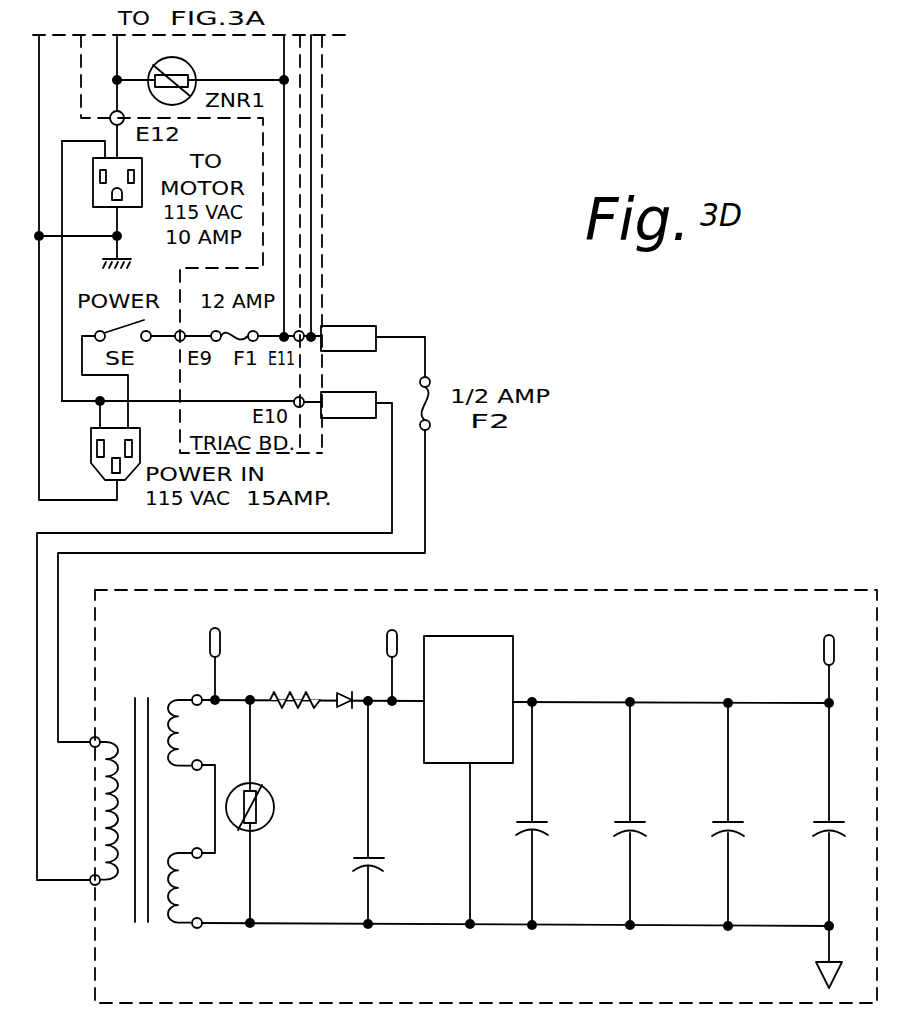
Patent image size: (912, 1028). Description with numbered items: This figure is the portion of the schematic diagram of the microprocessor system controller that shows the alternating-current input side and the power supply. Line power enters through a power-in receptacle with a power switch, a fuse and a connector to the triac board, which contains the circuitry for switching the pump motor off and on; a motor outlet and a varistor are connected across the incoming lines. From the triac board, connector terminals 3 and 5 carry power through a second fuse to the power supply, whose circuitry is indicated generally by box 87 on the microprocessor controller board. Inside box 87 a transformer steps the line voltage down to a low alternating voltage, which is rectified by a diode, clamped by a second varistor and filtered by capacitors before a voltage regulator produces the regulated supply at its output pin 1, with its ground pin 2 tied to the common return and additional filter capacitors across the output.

The power supply 87 is at (609, 590).
The connector terminal 3 is at (348, 338).
The connector terminal 5 is at (348, 405).
The regulator output pin 1 is at (671, 692).
The regulator ground pin 2 is at (483, 844).